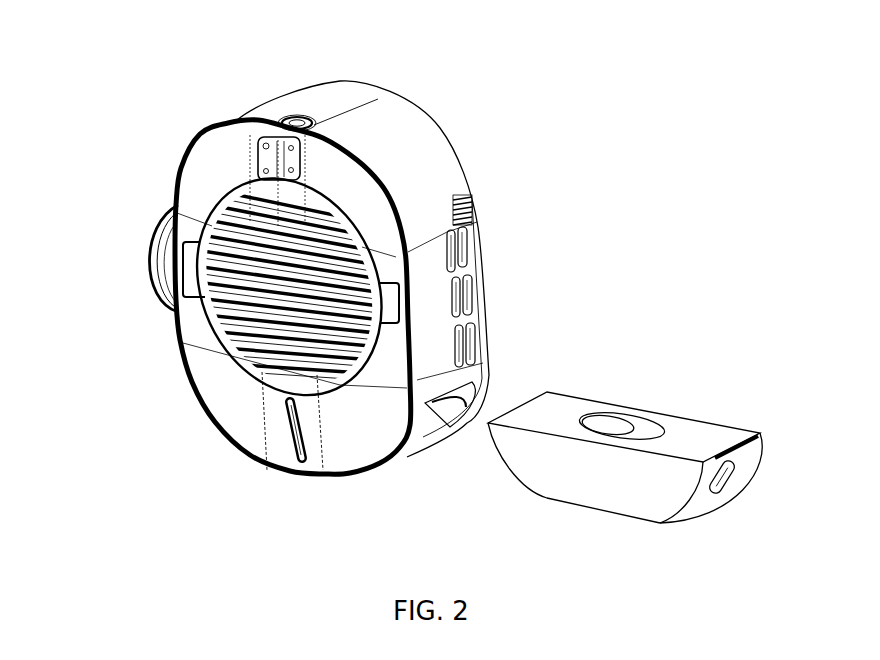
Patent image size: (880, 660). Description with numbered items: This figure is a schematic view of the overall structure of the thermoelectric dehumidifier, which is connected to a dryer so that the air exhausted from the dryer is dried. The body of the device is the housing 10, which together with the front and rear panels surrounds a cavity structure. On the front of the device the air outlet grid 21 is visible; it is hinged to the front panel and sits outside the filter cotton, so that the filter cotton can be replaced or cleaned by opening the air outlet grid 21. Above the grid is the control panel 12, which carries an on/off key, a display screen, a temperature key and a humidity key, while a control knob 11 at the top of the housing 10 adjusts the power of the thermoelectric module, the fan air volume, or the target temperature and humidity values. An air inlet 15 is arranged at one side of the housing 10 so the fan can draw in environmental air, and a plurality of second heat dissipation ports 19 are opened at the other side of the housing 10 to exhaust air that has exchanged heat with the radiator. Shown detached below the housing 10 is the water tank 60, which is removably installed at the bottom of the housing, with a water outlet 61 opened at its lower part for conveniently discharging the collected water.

The housing 10 is at (398, 121).
The control knob 11 is at (297, 113).
The control panel 12 is at (262, 137).
The air inlet 15 is at (148, 262).
The second heat dissipation port 19 is at (478, 262).
The air outlet grid 21 is at (188, 306).
The water tank 60 is at (690, 437).
The water outlet 61 is at (724, 489).